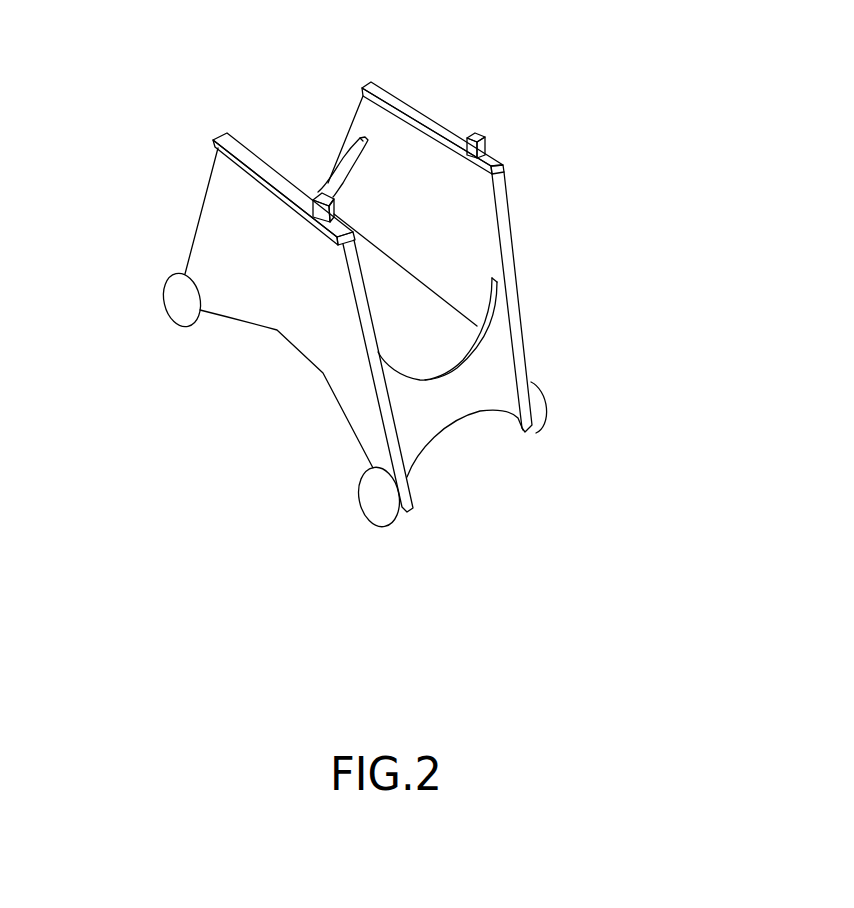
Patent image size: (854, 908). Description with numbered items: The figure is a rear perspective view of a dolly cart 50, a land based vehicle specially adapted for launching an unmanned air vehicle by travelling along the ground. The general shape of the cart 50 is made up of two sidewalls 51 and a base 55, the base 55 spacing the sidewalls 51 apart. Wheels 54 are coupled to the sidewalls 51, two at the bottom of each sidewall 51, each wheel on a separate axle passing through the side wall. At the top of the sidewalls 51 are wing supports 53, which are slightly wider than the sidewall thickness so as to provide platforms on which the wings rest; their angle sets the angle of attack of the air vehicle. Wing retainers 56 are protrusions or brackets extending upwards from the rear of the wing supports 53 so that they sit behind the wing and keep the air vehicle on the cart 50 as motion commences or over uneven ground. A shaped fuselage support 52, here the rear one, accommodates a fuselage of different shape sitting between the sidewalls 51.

The dolly cart 50 is at (564, 216).
The sidewalls 51 is at (203, 217).
The fuselage supports 52 is at (455, 380).
The wing supports 53 is at (237, 132).
The wheels 54 is at (355, 488).
The base 55 is at (418, 339).
The wing retainers 56 is at (481, 128).